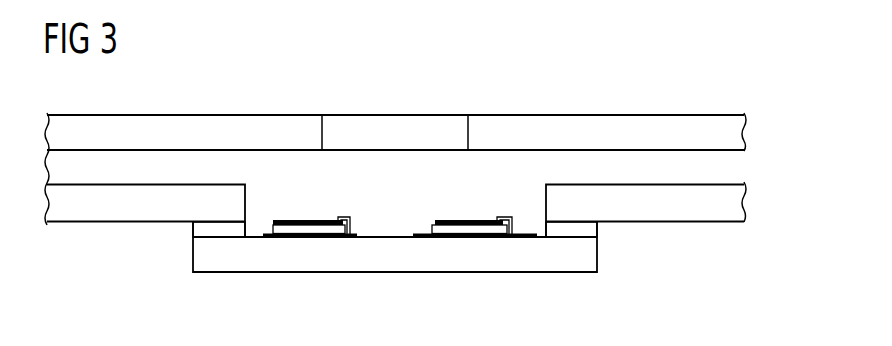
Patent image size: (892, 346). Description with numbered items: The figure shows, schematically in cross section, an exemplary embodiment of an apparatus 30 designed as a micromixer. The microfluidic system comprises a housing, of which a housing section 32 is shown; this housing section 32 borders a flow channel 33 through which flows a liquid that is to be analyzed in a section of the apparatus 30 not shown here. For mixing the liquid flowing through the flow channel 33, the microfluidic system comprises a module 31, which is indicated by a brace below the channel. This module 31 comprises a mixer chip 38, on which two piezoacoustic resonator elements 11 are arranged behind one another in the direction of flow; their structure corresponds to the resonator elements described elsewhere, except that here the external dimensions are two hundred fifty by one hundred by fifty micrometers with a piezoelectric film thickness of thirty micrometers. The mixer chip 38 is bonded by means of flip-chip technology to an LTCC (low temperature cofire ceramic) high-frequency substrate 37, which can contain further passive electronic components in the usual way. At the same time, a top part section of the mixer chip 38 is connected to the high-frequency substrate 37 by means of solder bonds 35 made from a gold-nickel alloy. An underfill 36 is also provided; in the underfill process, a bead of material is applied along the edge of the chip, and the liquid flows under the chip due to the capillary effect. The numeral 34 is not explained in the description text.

The apparatus 30 is at (707, 92).
The module 31 is at (750, 183).
The housing section 32 is at (618, 123).
The flow channel 33 is at (397, 162).
The substrate 34 is at (475, 263).
The solder bonds 35 is at (205, 230).
The underfill 36 is at (588, 230).
The high-frequency substrate 37 is at (673, 212).
The mixer chip 38 is at (395, 272).
The piezoacoustic resonator elements 11 is at (312, 219).